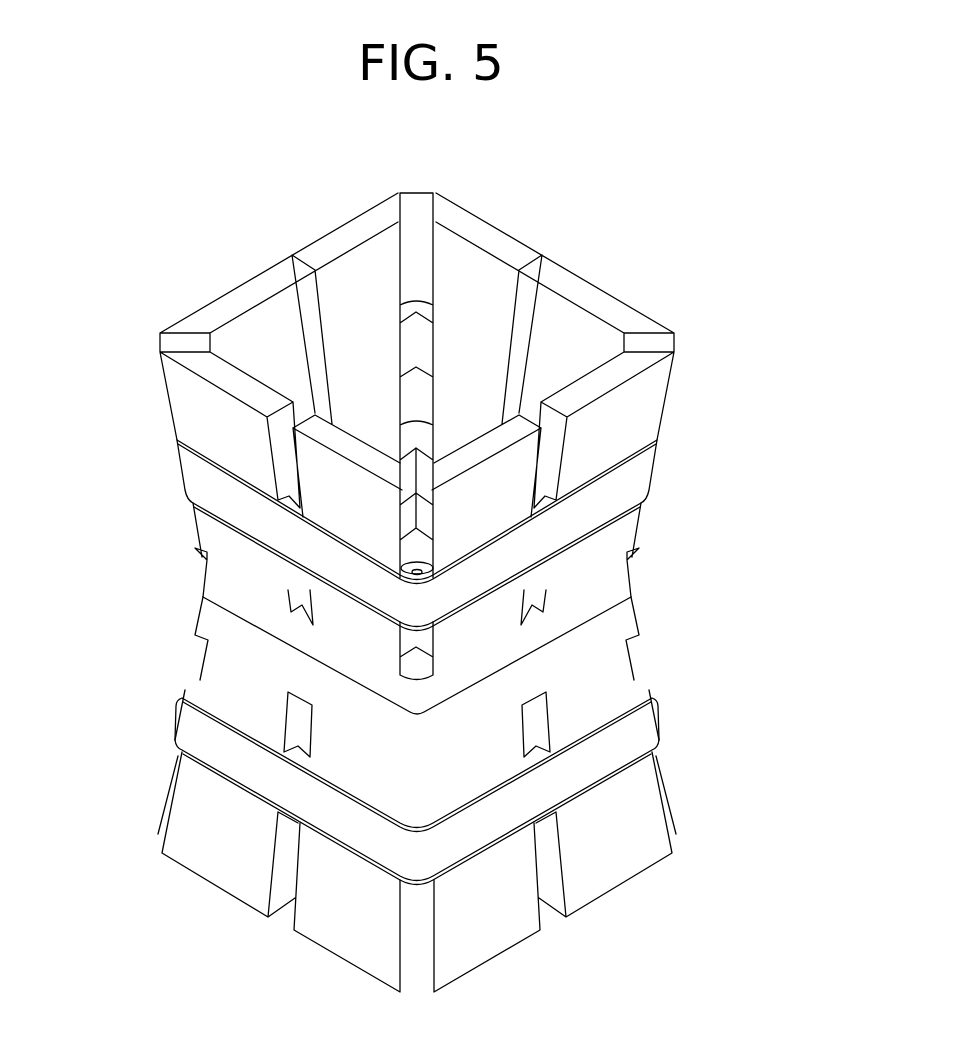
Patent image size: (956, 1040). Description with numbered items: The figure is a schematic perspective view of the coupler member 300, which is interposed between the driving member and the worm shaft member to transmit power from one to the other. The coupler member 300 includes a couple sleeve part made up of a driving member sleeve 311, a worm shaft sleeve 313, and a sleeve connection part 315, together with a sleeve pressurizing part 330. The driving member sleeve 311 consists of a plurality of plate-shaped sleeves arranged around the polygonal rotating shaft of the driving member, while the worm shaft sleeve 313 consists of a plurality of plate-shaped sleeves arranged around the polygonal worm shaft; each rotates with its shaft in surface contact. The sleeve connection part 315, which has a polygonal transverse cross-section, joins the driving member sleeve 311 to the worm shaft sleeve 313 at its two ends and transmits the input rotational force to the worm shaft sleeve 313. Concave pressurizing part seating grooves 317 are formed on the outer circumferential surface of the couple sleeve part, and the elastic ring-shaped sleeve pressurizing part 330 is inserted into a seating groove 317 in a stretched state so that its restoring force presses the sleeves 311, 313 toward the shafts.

The coupler member 300 is at (696, 187).
The driving member sleeve 311 is at (593, 875).
The worm shaft sleeve 313 is at (350, 307).
The sleeve connection part 315 is at (623, 620).
The pressurizing part seating groove 317 is at (607, 477).
The sleeve pressurizing part 330 is at (432, 654).